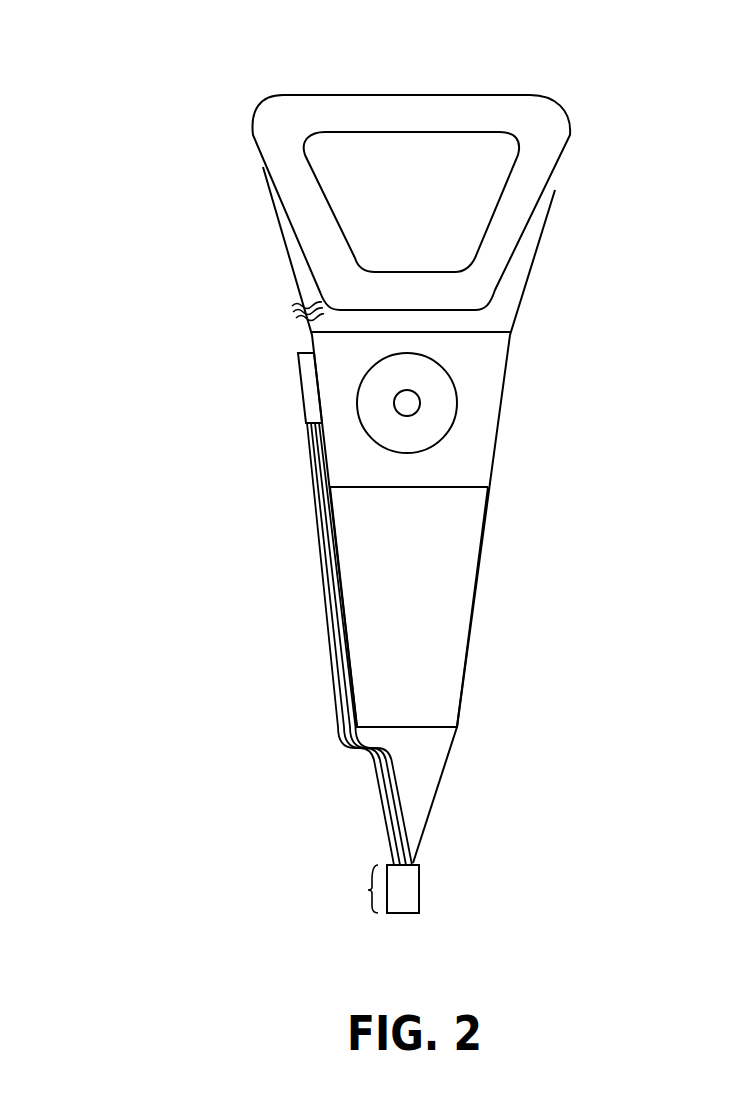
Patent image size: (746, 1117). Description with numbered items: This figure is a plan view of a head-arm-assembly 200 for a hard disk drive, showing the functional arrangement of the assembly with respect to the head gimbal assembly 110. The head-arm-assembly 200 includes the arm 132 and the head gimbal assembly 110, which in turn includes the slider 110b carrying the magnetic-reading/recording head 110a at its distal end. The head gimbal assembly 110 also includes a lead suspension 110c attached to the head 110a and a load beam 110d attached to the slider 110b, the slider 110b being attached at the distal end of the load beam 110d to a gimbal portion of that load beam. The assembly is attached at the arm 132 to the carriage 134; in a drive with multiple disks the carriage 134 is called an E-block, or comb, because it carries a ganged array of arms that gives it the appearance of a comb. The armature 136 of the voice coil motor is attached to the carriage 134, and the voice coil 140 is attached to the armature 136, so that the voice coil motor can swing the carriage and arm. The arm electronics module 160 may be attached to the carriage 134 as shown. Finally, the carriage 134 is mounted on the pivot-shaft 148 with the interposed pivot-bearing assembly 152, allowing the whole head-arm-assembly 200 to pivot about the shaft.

The handheld device 200 is at (80, 82).
The voice coil 140 is at (310, 225).
The armature 136 is at (308, 285).
The AE 160 is at (310, 395).
The pivot-bearing assembly 152 is at (440, 413).
The pivot-shaft 148 is at (407, 403).
The carriage 134 is at (463, 455).
The arm 132 is at (403, 567).
The head gimbal assembly 110 is at (277, 668).
The magnetic-reading/recording head 110a is at (212, 685).
The slider 110b is at (368, 890).
The lead suspension 110c is at (382, 800).
The load beam 110d is at (403, 765).